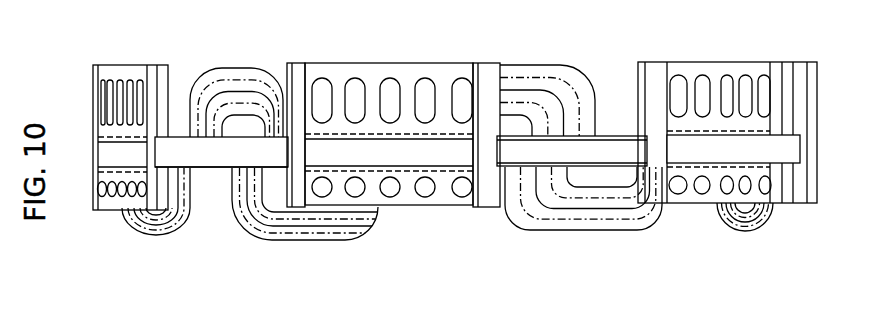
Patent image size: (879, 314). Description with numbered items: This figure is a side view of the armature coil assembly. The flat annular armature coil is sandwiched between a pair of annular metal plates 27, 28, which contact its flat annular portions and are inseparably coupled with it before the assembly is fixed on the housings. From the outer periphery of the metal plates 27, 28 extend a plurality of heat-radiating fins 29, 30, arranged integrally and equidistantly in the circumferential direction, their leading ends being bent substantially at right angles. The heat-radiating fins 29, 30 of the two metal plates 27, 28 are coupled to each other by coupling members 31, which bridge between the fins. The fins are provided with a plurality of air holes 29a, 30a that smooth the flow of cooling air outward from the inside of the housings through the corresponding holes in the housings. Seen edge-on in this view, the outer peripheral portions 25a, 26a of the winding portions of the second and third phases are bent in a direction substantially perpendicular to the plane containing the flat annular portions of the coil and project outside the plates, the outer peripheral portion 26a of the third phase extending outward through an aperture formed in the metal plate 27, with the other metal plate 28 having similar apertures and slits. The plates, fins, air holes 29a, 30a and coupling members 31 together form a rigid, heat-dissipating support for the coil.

The outer peripheral portion 25a is at (239, 80).
The outer peripheral portion 26a is at (152, 237).
The annular metal plate 27 is at (216, 168).
The annular metal plate 28 is at (174, 137).
The heat-radiating fins 29 is at (441, 202).
The air holes 29a is at (462, 194).
The heat-radiating fins 30 is at (336, 72).
The air holes 30a is at (390, 86).
The coupling members 31 is at (292, 68).